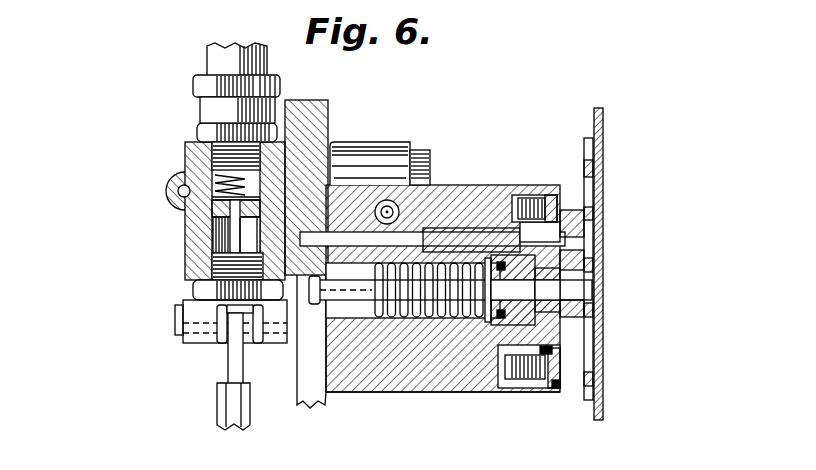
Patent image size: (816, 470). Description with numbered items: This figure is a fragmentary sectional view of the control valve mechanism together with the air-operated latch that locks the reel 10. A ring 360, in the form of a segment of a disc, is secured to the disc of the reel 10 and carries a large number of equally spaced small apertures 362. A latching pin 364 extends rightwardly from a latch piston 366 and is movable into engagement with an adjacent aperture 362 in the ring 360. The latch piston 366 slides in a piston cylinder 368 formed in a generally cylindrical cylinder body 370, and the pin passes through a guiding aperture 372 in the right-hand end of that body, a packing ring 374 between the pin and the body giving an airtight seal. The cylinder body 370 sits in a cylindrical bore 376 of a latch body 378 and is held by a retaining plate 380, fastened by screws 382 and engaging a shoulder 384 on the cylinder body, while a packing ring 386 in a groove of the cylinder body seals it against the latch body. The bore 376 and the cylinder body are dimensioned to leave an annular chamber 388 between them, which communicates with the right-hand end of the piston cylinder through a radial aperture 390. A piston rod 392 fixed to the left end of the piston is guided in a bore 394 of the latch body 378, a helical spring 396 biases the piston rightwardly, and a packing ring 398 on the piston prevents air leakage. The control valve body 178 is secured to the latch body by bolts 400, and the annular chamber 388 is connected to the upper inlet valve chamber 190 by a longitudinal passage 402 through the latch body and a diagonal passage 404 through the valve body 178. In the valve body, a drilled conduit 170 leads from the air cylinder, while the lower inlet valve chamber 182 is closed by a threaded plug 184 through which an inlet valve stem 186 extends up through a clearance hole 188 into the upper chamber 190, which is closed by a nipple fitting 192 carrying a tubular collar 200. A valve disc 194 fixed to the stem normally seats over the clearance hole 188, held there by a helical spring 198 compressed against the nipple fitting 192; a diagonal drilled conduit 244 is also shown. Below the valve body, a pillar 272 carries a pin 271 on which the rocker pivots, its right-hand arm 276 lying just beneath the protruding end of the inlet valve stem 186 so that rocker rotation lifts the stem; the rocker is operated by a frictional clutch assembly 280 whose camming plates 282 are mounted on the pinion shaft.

The reel 10 is at (592, 120).
The drilled conduit 170 is at (397, 172).
The valve body 178 is at (285, 125).
The lower cylindrical inlet valve chamber 182 is at (207, 218).
The threaded plug 184 is at (213, 262).
The inlet valve stem 186 is at (233, 235).
The clearance hole 188 is at (190, 215).
The upper cylindrical inlet valve chamber 190 is at (197, 173).
The nipple fitting 192 is at (197, 128).
The valve disc 194 is at (183, 208).
The helical spring 198 is at (192, 186).
The tubular collar 200 is at (213, 57).
The diagonal drilled conduit 244 is at (178, 190).
The pin 271 is at (180, 327).
The pillar 272 is at (193, 313).
The right-hand arm 276 is at (225, 340).
The frictional clutch assembly 280 is at (213, 406).
The camming plates 282 is at (237, 362).
The ring 360 is at (588, 140).
The apertures 362 is at (587, 172).
The latching pin 364 is at (592, 290).
The latch piston 366 is at (465, 340).
The piston cylinder 368 is at (430, 350).
The cylinder body 370 is at (455, 340).
The guiding aperture 372 is at (560, 305).
The packing ring 374 is at (540, 262).
The cylindrical bore 376 is at (462, 228).
The latch body 378 is at (440, 197).
The retaining plate 380 is at (563, 395).
The screws 382 is at (560, 385).
The shoulder 384 is at (548, 355).
The packing ring 386 is at (527, 365).
The annular chamber 388 is at (490, 228).
The radial aperture 390 is at (490, 330).
The piston rod 392 is at (340, 393).
The bore 394 is at (356, 392).
The helical spring 396 is at (406, 372).
The packing ring 398 is at (557, 245).
The bolts 400 is at (425, 145).
The longitudinal passage 402 is at (338, 230).
The diagonal passage 404 is at (306, 180).